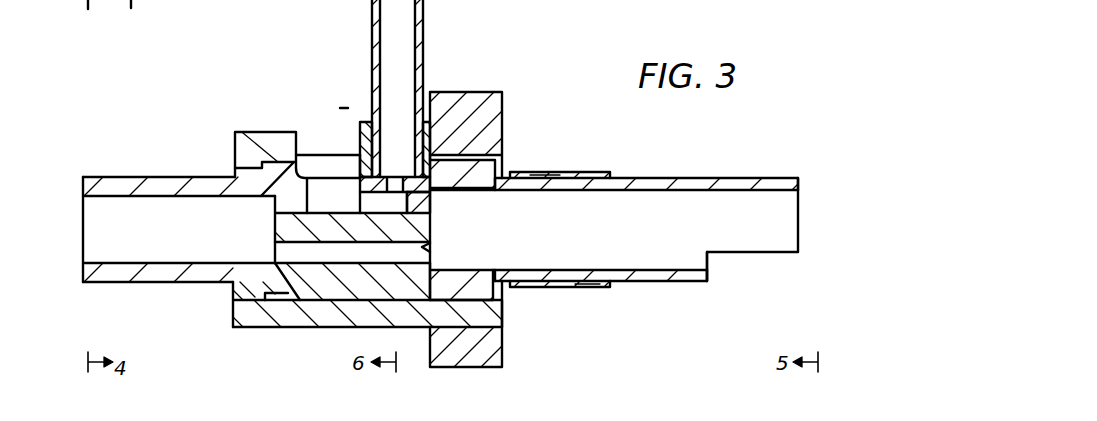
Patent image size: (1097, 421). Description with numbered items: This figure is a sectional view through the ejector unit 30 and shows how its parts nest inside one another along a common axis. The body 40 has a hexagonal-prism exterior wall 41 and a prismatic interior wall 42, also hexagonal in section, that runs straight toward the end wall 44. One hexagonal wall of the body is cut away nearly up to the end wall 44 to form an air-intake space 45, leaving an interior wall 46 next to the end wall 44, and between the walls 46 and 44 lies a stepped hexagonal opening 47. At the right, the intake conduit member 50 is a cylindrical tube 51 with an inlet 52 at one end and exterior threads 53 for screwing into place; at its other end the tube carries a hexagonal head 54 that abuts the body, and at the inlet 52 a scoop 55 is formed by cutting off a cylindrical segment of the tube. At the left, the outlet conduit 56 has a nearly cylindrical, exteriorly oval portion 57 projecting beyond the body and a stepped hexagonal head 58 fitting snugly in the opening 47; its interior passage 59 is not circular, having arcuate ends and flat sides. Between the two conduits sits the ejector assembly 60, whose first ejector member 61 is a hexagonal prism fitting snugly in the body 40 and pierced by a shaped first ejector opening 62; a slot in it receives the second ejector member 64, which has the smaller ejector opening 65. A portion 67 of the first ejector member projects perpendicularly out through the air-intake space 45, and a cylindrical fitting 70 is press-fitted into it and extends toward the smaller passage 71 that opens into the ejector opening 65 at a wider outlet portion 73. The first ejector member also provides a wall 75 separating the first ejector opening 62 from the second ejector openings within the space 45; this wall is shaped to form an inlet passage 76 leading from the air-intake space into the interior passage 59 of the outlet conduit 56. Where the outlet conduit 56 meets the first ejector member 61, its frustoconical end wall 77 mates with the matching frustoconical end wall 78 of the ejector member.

The coupling assembly 30 is at (558, 78).
The body 40 is at (268, 135).
The hexagonal-prism exterior wall 41 is at (283, 329).
The prismatic interior wall 42 is at (332, 300).
The end wall 44 is at (235, 150).
The air-intake space 45 is at (341, 170).
The interior wall 46 is at (300, 155).
The stepped hexagonal opening 47 is at (260, 170).
The intake conduit member 50 is at (634, 181).
The cylindrical tube 51 is at (650, 278).
The inlet 52 is at (790, 232).
The exterior threads 53 is at (560, 175).
The hexagonal head 54 is at (504, 166).
The scoop 55 is at (740, 238).
The outlet conduit 56 is at (148, 177).
The nearly cylindrical portion 57 is at (127, 272).
The stepped hexagonal head 58 is at (250, 278).
The interior passage 59 is at (133, 243).
The ejector assembly 60 is at (434, 222).
The first ejector member 61 is at (434, 265).
The first ejector opening 62 is at (292, 254).
The second ejector member 64 is at (430, 247).
The ejector opening 65 is at (425, 203).
The portion 67 is at (362, 121).
The cylindrical fitting 70 is at (456, 22).
The smaller passage 71 is at (402, 180).
The wider outlet portion 73 is at (362, 206).
The wall 75 is at (317, 228).
The inlet passage 76 is at (282, 218).
The frustoconical end wall 77 is at (290, 290).
The frustoconical end wall 78 is at (283, 298).